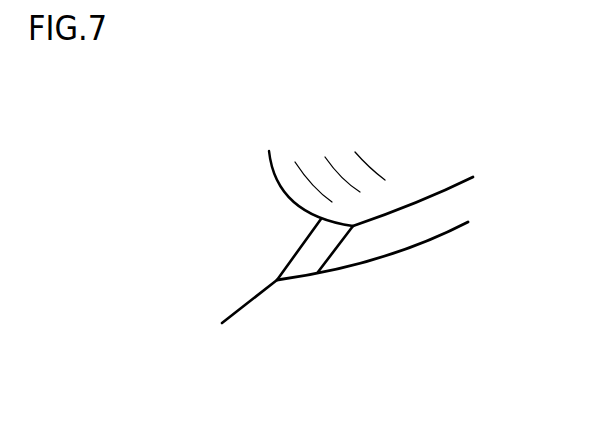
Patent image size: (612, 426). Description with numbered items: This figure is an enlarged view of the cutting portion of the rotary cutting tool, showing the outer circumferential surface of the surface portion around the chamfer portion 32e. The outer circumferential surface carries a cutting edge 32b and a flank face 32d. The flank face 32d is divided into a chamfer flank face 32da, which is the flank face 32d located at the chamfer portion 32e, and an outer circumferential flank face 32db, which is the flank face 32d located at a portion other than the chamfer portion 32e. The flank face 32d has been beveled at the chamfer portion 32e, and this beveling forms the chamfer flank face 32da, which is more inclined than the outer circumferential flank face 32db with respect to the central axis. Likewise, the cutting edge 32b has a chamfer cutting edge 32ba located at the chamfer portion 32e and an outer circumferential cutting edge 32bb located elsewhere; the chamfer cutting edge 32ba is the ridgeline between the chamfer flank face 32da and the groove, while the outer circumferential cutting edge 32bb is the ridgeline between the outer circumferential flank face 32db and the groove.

The cutting edge 32b is at (425, 98).
The chamfer cutting edge 32ba is at (330, 222).
The outer circumferential cutting edge 32bb is at (430, 197).
The flank face 32d is at (438, 267).
The chamfer flank face 32da is at (307, 263).
The outer circumferential flank face 32db is at (358, 243).
The chamfer portion 32e is at (278, 334).